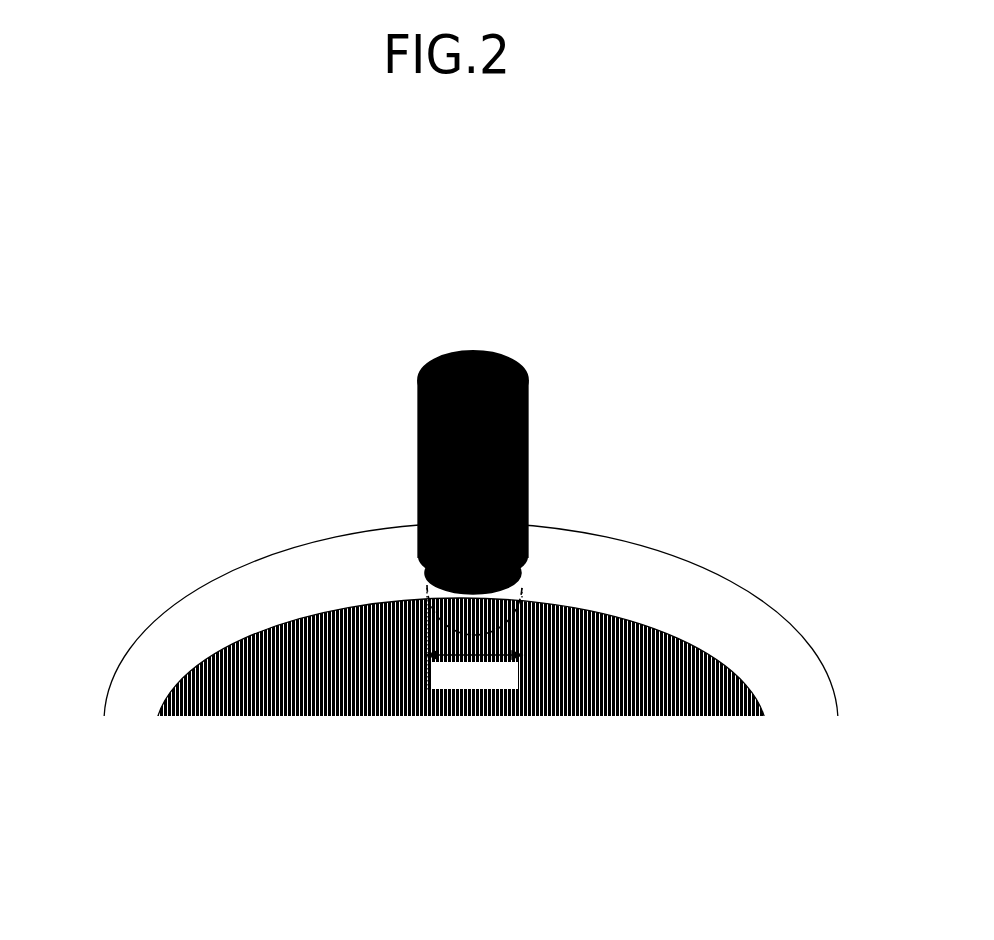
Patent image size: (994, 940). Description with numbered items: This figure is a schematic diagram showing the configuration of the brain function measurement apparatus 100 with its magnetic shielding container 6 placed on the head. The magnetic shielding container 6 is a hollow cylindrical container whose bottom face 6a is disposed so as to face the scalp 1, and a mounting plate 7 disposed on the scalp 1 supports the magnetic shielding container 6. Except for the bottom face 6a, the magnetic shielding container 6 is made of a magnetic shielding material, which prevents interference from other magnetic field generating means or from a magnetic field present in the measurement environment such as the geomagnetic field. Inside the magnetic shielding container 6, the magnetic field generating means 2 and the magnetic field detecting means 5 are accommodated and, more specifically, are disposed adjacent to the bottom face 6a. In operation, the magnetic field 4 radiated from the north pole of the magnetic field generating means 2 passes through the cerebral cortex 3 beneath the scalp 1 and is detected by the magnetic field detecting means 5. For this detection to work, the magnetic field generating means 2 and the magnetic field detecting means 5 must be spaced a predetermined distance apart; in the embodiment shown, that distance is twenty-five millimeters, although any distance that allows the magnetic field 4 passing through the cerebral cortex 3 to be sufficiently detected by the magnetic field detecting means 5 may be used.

The brain function measurement apparatus 100 is at (260, 334).
The scalp 1 is at (668, 545).
The magnetic field generating means 2 is at (524, 556).
The cerebral cortex 3 is at (456, 626).
The magnetic field 4 is at (503, 622).
The magnetic field detecting means 5 is at (418, 548).
The magnetic shielding container 6 is at (519, 446).
The bottom face 6a is at (525, 567).
The mounting plate 7 is at (430, 562).